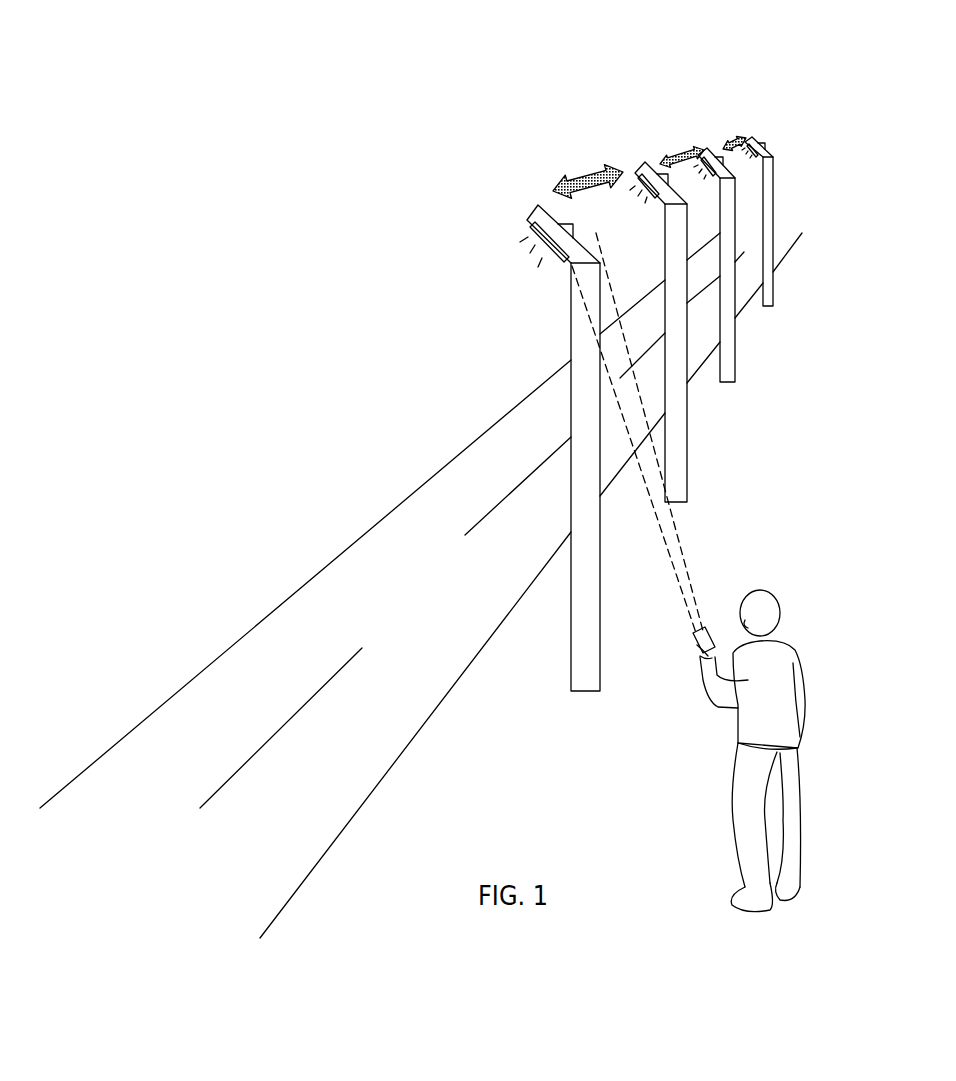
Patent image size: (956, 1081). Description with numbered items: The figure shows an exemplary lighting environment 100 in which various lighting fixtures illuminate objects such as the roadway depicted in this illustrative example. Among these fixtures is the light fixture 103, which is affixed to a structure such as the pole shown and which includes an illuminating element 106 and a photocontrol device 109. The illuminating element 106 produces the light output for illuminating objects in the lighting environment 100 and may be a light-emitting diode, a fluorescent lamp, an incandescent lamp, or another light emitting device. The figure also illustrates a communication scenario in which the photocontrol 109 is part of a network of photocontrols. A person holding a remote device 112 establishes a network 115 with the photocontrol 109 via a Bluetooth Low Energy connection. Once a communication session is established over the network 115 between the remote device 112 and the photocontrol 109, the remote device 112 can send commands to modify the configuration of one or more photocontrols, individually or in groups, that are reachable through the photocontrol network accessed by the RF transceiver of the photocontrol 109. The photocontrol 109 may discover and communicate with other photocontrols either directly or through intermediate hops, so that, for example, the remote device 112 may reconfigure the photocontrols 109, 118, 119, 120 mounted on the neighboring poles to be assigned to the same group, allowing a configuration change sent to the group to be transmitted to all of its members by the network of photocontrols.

The lighting environment 100 is at (262, 55).
The light fixture 103 is at (547, 421).
The illuminating element 106 is at (528, 232).
The photocontrol device 109 is at (574, 222).
The remote device 112 is at (713, 627).
The network 115 is at (652, 566).
The photocontrol 118 is at (656, 158).
The photocontrol 119 is at (705, 142).
The photocontrol 120 is at (751, 130).